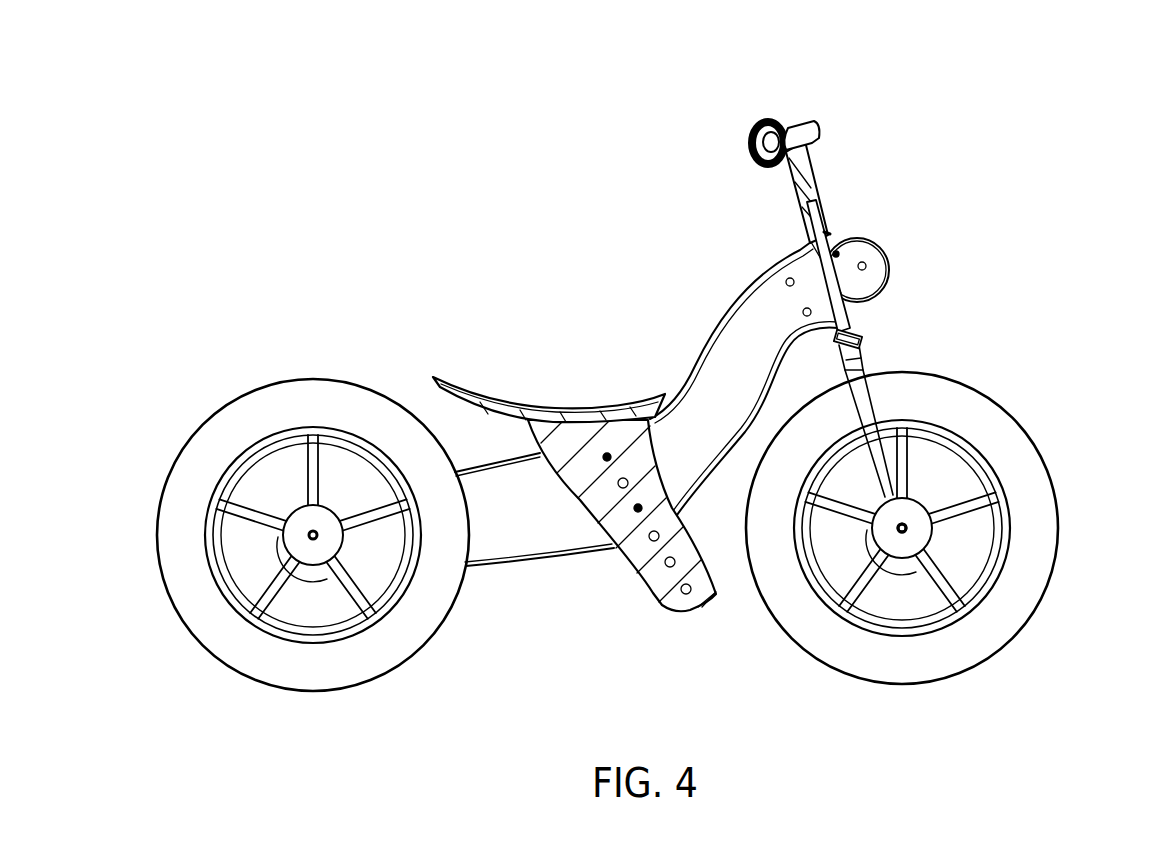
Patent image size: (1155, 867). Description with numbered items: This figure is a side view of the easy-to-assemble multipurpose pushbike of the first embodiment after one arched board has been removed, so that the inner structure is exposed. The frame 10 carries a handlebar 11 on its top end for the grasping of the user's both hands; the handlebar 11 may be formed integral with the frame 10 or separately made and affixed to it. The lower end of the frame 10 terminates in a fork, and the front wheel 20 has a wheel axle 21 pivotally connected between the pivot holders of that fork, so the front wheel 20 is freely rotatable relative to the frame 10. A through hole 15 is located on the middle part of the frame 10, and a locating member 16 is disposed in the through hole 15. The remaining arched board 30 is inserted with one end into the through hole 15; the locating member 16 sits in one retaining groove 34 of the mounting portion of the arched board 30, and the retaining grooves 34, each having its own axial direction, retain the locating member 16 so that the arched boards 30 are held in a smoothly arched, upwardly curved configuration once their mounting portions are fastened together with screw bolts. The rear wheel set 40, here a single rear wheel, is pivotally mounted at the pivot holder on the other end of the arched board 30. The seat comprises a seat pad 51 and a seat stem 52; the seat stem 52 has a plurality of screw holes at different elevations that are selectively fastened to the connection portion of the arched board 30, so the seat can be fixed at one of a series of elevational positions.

The frame 10 is at (808, 185).
The handlebar 11 is at (800, 123).
The through hole 15 is at (828, 233).
The locating member 16 is at (842, 290).
The front wheel 20 is at (1023, 468).
The wheel axle 21 is at (906, 529).
The arched board 30 is at (528, 546).
The retaining groove 34 is at (836, 254).
The rear wheel set 40 is at (237, 401).
The seat pad 51 is at (590, 394).
The seat stem 52 is at (653, 580).